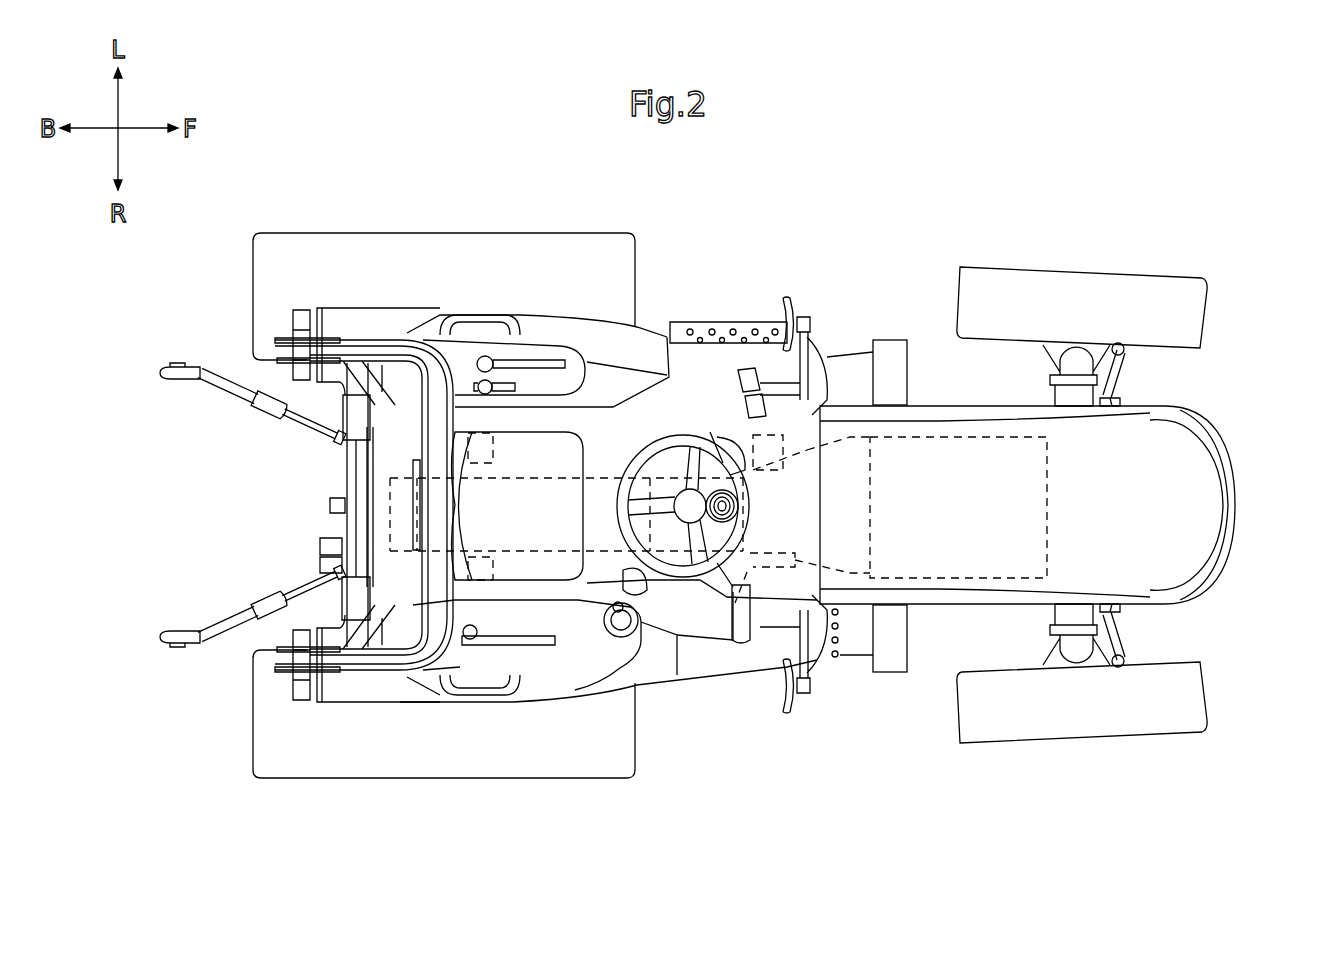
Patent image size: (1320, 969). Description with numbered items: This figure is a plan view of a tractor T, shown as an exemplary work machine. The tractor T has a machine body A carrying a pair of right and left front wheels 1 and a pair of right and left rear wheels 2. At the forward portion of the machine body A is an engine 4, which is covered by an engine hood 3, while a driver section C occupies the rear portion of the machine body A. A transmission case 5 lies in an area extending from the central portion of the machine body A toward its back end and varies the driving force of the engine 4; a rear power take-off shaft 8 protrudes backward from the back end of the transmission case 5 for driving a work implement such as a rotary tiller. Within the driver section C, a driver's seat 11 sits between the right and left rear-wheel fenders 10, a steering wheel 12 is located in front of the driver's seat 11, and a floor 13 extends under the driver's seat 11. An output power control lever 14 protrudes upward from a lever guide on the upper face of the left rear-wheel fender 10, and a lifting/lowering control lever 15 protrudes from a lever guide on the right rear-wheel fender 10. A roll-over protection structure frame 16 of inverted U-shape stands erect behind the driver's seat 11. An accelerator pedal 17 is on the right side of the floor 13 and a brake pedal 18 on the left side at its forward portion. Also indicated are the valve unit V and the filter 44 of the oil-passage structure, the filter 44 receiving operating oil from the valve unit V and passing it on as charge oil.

The front wheels 1 is at (1088, 280).
The rear wheels 2 is at (470, 242).
The engine hood 3 is at (1195, 497).
The engine 4 is at (953, 437).
The transmission case 5 is at (807, 450).
The rear power take-off (PTO) shaft 8 is at (330, 504).
The rear-wheel fenders 10 is at (372, 318).
The driver's seat 11 is at (577, 470).
The steering wheel 12 is at (663, 455).
The floor 13 is at (688, 660).
The output power control lever 14 is at (485, 356).
The lifting/lowering control lever 15 is at (471, 640).
The roll-over protection structure (ROPS) frame 16 is at (445, 515).
The accelerator pedal 17 is at (740, 642).
The brake pedal 18 is at (748, 398).
The filter 44 is at (740, 447).
The machine body A is at (760, 328).
The driver section C is at (715, 692).
The valve unit V is at (740, 600).
The tractor T is at (1222, 142).